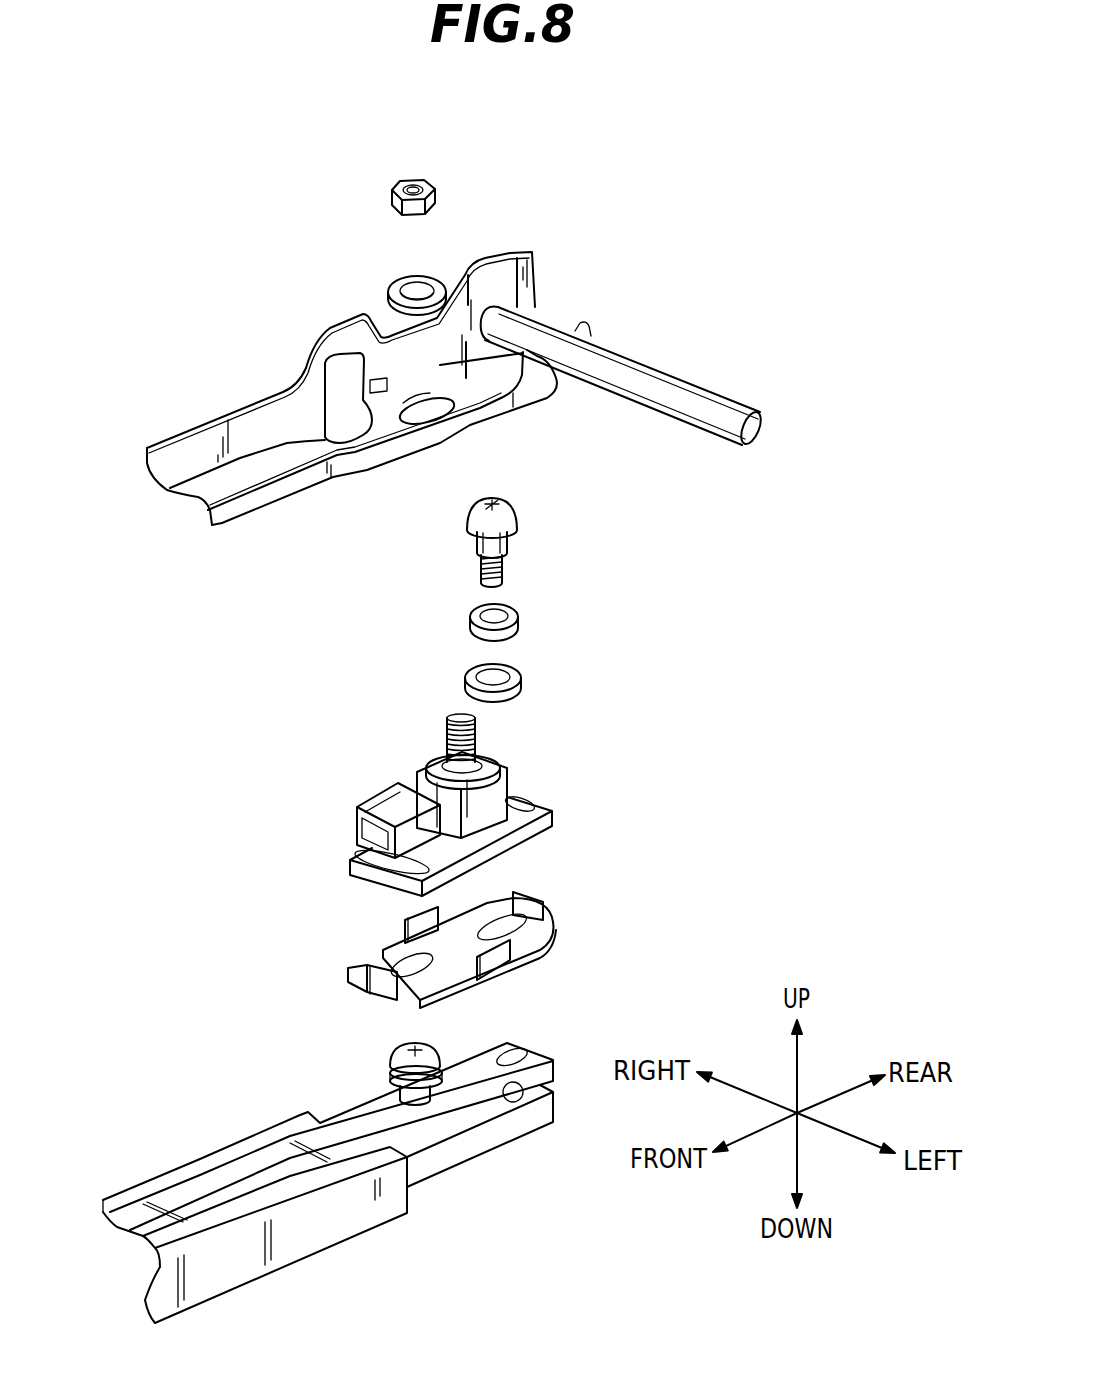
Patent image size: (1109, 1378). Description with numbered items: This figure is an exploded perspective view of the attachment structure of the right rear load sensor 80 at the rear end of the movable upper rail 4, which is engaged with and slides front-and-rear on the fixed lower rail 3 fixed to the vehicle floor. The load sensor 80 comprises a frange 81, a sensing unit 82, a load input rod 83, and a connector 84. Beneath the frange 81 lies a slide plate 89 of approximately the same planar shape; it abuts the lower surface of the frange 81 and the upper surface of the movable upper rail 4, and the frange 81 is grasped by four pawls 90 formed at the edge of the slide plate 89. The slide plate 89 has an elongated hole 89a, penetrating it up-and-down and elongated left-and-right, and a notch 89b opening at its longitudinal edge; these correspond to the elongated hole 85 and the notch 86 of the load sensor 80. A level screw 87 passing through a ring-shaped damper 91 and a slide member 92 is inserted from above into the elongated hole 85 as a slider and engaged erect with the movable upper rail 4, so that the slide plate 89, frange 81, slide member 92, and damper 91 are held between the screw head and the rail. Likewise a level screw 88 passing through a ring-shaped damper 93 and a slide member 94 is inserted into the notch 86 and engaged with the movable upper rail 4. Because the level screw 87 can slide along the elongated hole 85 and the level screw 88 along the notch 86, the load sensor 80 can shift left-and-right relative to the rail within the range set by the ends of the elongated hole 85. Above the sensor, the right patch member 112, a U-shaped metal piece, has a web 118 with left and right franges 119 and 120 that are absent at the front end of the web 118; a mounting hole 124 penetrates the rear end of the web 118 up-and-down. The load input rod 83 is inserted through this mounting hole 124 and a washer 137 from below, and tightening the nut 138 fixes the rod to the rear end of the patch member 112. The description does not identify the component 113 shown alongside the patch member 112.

The fixed lower rail 3 is at (343, 1216).
The movable upper rail 4 is at (328, 1115).
The right rear load sensor 80 is at (463, 800).
The frange 81 is at (463, 839).
The sensing unit 82 is at (505, 783).
The load input rod 83 is at (446, 732).
The connector 84 is at (375, 799).
The elongated hole 85 is at (513, 801).
The notch 86 is at (365, 863).
The level screw 87 is at (513, 546).
The level screw 88 is at (447, 1047).
The slide plate 89 is at (455, 930).
The elongated hole 89a is at (497, 918).
The notch 89b is at (392, 962).
The pawls 90 is at (402, 927).
The ring-shaped damper 91 is at (520, 618).
The slide member 92 is at (524, 680).
The ring-shaped damper 93 is at (390, 1063).
The slide member 94 is at (392, 1083).
The right patch member 112 is at (355, 419).
The rod 113 is at (672, 390).
The web 118 is at (277, 463).
The frange 119 is at (210, 467).
The frange 120 is at (333, 470).
The mounting hole 124 is at (427, 433).
The washer 137 is at (424, 276).
The nut 138 is at (434, 184).